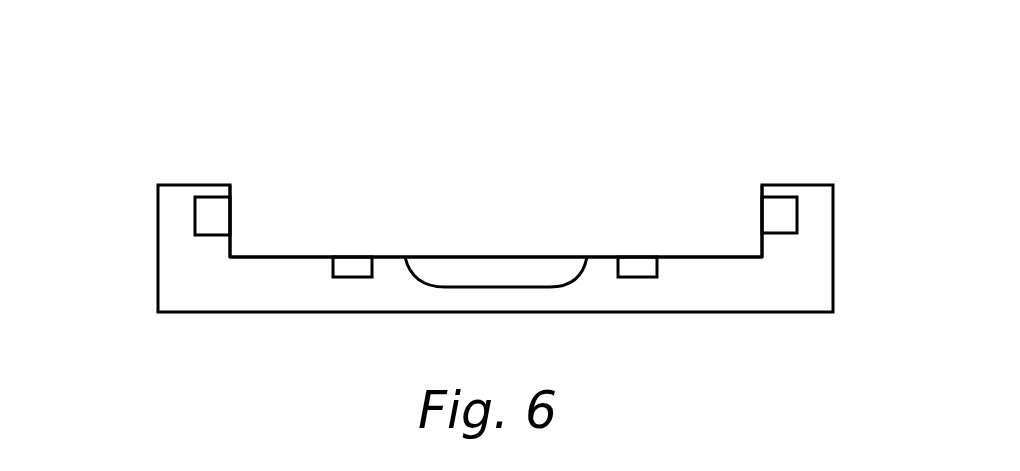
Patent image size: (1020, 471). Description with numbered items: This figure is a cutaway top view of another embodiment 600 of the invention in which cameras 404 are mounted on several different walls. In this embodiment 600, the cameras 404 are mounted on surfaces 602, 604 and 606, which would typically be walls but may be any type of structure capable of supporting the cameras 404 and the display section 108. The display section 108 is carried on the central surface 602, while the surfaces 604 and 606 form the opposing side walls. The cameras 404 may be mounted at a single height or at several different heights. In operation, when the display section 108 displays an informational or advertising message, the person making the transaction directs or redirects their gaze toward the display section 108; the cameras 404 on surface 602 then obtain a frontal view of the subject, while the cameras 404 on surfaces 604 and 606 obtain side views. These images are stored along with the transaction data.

The embodiment 600 is at (233, 100).
The surface 602 is at (300, 257).
The surface 604 is at (230, 242).
The surface 606 is at (762, 242).
The camera 404 is at (221, 210).
The display section 108 is at (503, 268).